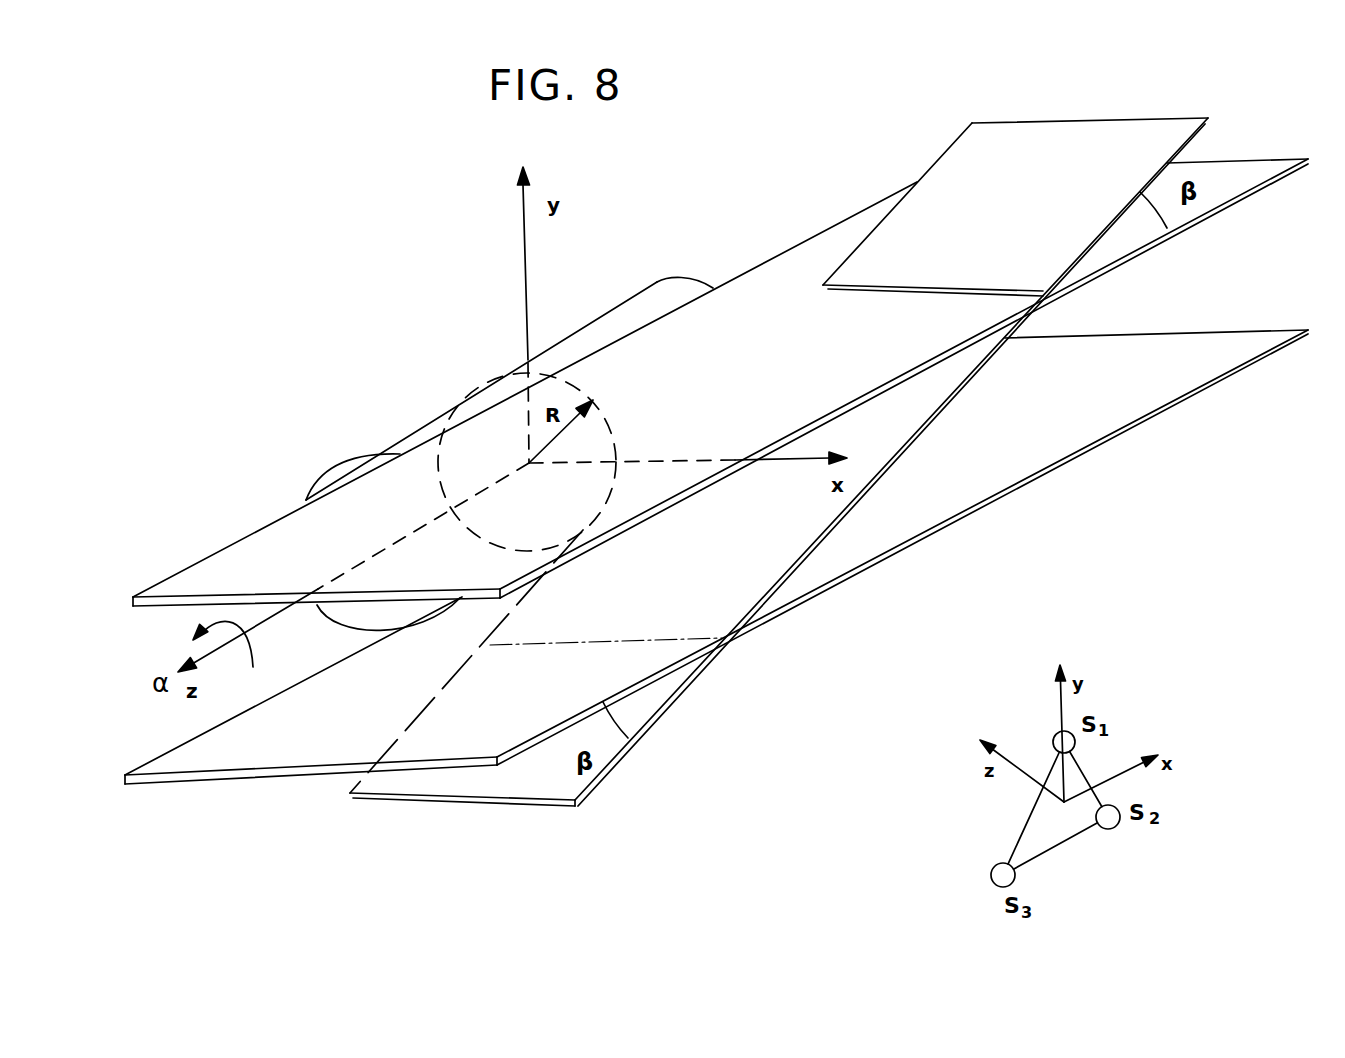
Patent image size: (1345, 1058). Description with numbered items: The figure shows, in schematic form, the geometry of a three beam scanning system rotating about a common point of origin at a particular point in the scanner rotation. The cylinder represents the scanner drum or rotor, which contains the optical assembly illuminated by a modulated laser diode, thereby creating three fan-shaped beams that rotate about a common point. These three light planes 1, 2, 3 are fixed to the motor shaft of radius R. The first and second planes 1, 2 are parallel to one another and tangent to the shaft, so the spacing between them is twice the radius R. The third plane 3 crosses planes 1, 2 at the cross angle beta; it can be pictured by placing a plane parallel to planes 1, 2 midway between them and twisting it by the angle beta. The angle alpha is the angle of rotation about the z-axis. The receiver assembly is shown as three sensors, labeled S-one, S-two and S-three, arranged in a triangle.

The first light plane 1 is at (1240, 200).
The second light plane 2 is at (1293, 327).
The third light plane 3 is at (1192, 143).